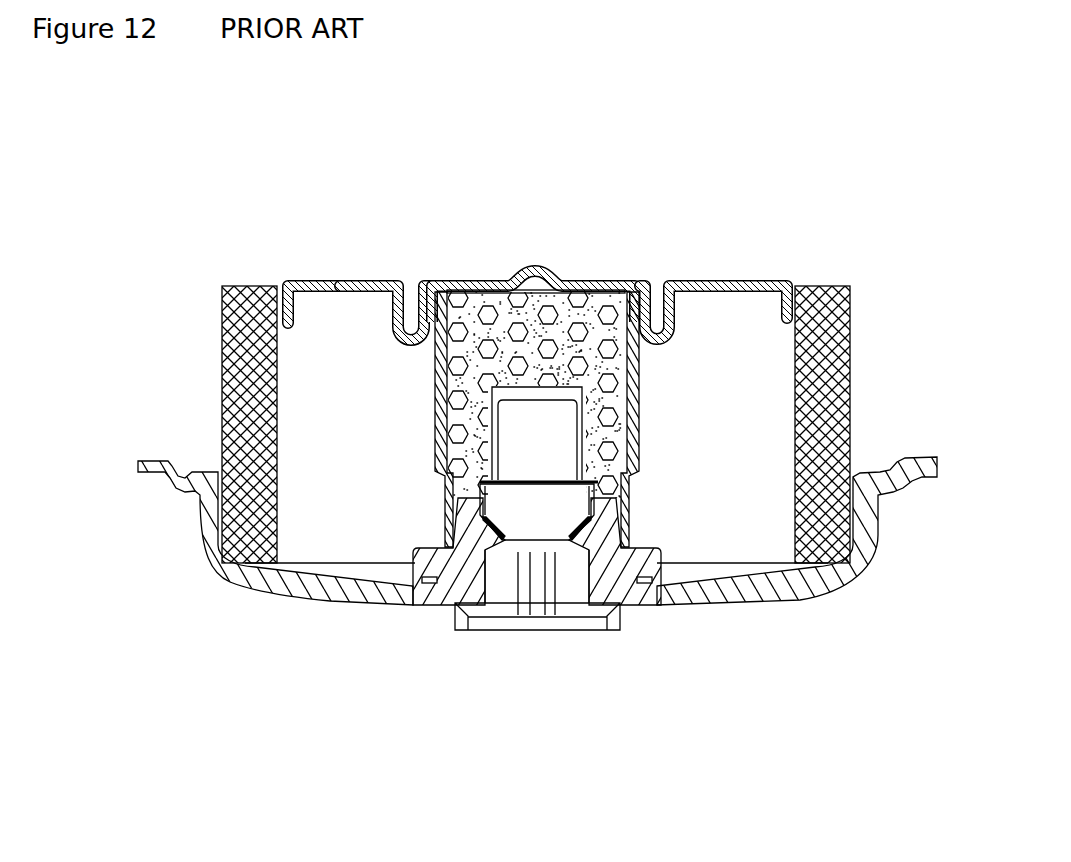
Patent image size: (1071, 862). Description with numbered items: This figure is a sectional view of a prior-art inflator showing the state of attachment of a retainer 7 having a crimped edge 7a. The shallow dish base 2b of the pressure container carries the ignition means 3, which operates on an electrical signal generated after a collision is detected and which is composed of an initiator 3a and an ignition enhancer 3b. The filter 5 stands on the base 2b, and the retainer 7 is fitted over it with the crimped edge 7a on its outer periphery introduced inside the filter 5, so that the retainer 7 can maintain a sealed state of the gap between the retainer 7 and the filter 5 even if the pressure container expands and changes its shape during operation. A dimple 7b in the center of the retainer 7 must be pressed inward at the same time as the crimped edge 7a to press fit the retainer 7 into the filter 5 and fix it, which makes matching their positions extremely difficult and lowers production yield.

The shallow dish base 2b is at (327, 598).
The ignition means 3 is at (537, 567).
The initiator 3a is at (530, 460).
The ignition enhancer 3b is at (477, 498).
The filter 5 is at (835, 318).
The retainer 7 is at (535, 315).
The crimped edge 7a is at (285, 328).
The dimple 7b is at (417, 341).